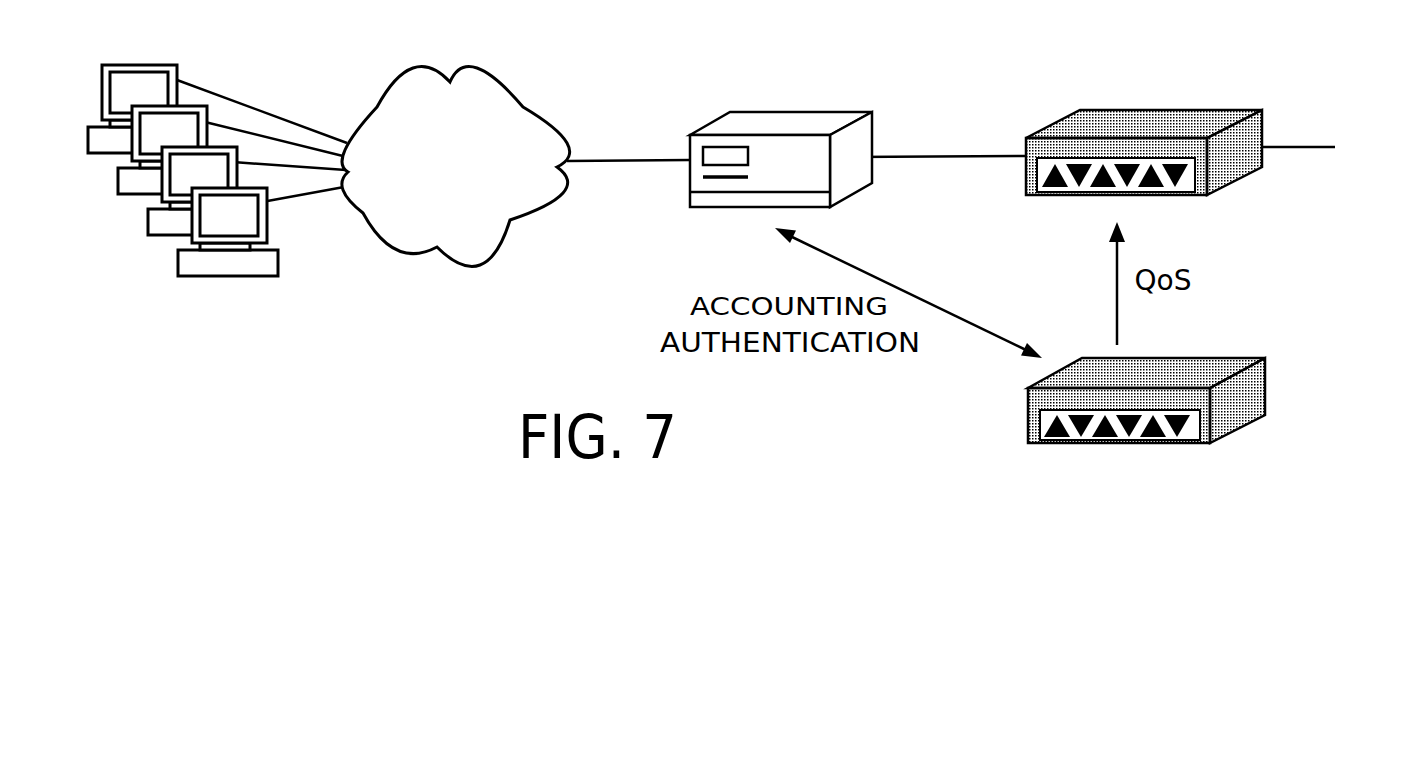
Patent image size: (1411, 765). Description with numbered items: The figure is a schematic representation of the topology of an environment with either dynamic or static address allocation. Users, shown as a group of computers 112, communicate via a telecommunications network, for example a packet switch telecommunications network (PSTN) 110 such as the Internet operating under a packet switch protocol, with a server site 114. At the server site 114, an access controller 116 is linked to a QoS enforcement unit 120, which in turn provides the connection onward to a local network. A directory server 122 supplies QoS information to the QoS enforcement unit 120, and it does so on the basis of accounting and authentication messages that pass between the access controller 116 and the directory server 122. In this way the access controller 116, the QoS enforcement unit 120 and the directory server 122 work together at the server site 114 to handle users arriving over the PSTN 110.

The packet switch telecommunications network (PSTN) 110 is at (493, 258).
The user computers 112 is at (175, 267).
The server site 114 is at (1310, 79).
The access controller 116 is at (872, 185).
The QoS enforcement unit 120 is at (1243, 177).
The directory server 122 is at (1253, 425).